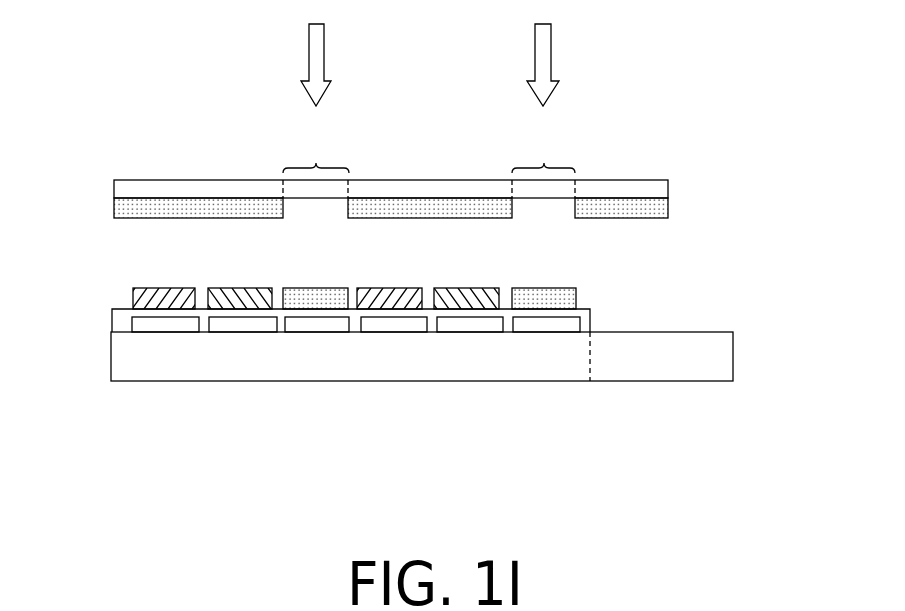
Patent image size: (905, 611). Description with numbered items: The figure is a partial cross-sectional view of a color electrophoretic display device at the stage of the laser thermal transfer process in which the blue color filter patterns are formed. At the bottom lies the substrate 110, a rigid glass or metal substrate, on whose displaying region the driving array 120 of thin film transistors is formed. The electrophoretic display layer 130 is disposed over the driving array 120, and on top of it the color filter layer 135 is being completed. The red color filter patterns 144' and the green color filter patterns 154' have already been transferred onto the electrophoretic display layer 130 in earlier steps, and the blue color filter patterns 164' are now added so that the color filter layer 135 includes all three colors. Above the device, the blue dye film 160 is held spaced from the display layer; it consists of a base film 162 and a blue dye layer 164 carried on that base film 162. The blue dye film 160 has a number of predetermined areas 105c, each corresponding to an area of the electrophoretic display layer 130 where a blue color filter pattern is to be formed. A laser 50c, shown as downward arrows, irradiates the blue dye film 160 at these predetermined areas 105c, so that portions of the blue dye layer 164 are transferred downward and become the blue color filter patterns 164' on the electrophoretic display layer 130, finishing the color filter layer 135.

The laser 50c is at (543, 58).
The predetermined areas 105c is at (429, 151).
The substrate 110 is at (647, 375).
The driving array 120 is at (133, 320).
The electrophoretic display layer 130 is at (122, 312).
The color filter layer 135 is at (348, 385).
The red color filter patterns 144' is at (352, 360).
The green color filter patterns 154' is at (163, 360).
The blue color filter patterns 164' is at (429, 360).
The blue dye film 160 is at (469, 201).
The base film 162 is at (662, 190).
The blue dye layer 164 is at (437, 221).